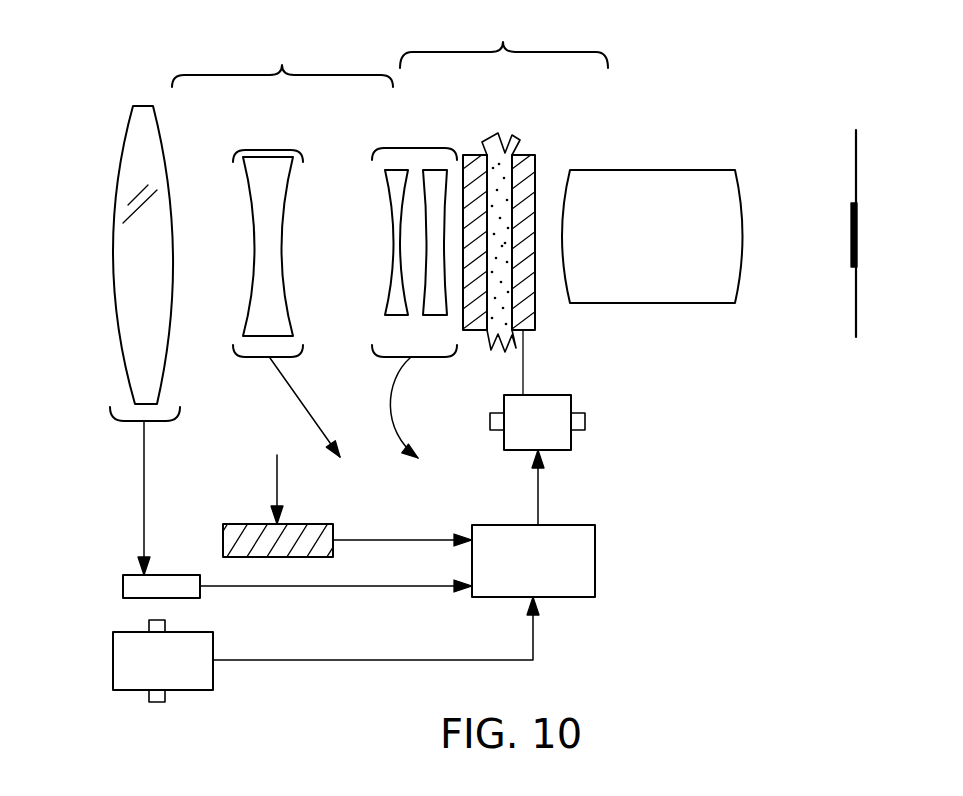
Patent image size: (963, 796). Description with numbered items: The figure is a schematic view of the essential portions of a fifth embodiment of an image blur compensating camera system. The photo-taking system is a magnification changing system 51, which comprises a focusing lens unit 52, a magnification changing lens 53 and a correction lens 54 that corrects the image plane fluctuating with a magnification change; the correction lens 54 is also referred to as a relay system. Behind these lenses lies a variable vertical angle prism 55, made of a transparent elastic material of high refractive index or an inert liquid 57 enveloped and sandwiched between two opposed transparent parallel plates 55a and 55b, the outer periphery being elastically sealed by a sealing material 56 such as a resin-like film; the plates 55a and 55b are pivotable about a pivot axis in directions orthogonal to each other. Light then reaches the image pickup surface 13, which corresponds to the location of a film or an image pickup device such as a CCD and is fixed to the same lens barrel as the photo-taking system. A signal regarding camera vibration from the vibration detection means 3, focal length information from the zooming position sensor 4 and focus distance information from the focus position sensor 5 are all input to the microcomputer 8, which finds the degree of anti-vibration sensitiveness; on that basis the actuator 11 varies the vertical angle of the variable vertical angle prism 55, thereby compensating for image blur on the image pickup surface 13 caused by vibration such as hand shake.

The vibration detection means 3 is at (113, 660).
The zooming position sensor 4 is at (228, 524).
The focus position sensor 5 is at (123, 585).
The microcomputer 8 is at (595, 543).
The actuator 11 is at (567, 395).
The image pickup surface 13 is at (857, 200).
The magnification changing system 51 is at (282, 60).
The focusing lens unit 52 is at (155, 138).
The magnification changing lens 53 is at (262, 150).
The correction lens 54 is at (422, 147).
The variable vertical angle prism 55 is at (504, 185).
The transparent parallel plate 55a is at (468, 155).
The transparent parallel plate 55b is at (527, 155).
The sealing material 56 is at (650, 170).
The transparent elastic material or inert liquid 57 is at (503, 180).